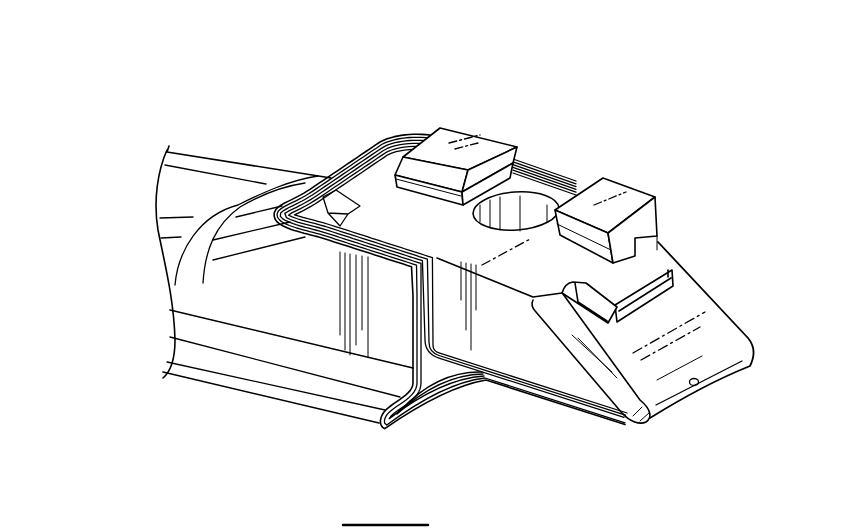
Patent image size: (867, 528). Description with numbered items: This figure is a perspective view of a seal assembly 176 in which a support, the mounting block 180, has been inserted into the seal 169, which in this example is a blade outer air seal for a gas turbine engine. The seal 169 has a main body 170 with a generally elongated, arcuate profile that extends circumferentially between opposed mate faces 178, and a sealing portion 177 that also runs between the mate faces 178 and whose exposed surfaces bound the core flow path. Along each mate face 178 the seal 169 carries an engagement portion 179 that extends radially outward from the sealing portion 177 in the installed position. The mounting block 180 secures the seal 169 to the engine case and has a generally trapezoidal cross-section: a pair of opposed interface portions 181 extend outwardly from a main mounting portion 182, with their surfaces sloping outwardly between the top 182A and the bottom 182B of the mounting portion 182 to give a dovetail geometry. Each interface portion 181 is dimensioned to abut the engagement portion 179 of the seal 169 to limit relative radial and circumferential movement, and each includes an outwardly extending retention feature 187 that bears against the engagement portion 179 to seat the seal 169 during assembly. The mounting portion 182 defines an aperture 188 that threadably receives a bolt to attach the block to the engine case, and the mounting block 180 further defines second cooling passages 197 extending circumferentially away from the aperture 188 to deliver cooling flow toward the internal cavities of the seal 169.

The seal assembly 176 is at (144, 55).
The seal 169 is at (228, 142).
The main body 170 is at (167, 212).
The sealing portion 177 is at (297, 378).
The mate faces 178 is at (422, 404).
The engagement portion 179 is at (408, 142).
The mounting block 180 is at (660, 180).
The interface portion 181 is at (322, 217).
The mounting portion 182 is at (543, 200).
The top of the mounting portion 182A is at (513, 270).
The bottom of the mounting portion 182B is at (593, 413).
The retention feature 187 is at (368, 178).
The aperture 188 is at (554, 188).
The second cooling passages 197 is at (700, 386).